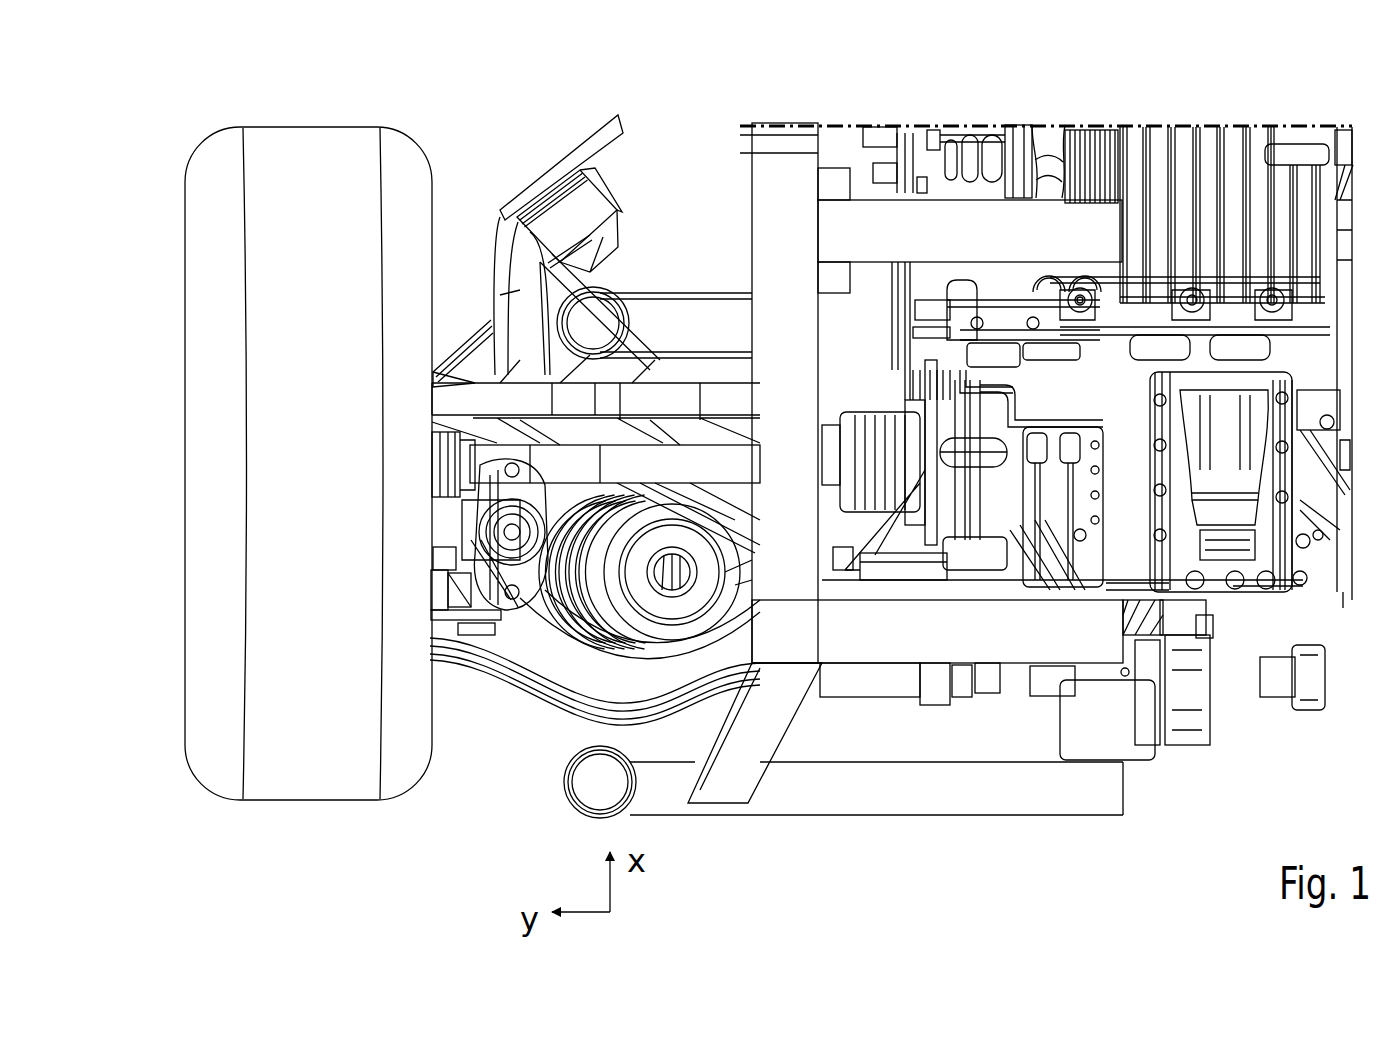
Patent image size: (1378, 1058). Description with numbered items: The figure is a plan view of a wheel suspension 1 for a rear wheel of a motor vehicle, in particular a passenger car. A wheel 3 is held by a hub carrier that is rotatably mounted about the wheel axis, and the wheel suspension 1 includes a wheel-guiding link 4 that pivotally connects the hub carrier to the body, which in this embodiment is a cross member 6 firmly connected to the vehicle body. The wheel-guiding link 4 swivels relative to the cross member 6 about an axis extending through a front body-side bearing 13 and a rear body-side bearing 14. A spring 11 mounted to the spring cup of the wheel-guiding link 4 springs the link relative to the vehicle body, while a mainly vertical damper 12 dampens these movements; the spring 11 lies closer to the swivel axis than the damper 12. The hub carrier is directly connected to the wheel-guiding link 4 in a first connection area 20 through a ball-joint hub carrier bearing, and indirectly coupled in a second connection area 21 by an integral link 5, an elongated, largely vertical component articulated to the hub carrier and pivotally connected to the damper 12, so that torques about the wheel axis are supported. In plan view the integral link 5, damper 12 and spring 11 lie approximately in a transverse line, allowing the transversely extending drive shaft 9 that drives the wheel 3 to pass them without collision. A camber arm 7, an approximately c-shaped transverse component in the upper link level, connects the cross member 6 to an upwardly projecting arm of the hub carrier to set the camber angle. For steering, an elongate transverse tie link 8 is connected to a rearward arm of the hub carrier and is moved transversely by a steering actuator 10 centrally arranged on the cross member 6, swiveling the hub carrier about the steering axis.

The wheel suspension 1 is at (690, 120).
The wheel 3 is at (213, 275).
The wheel-guiding link 4 is at (510, 267).
The integral link 5 is at (440, 522).
The cross member 6 is at (665, 800).
The camber arm 7 is at (478, 385).
The tie link 8 is at (567, 690).
The drive shaft 9 is at (657, 467).
The steering actuator 10 is at (1138, 772).
The spring 11 is at (558, 642).
The damper 12 is at (470, 645).
The front body-side bearing 13 is at (533, 160).
The rear body-side bearing 14 is at (878, 705).
The first connection area 20 is at (440, 319).
The second connection area 21 is at (310, 530).